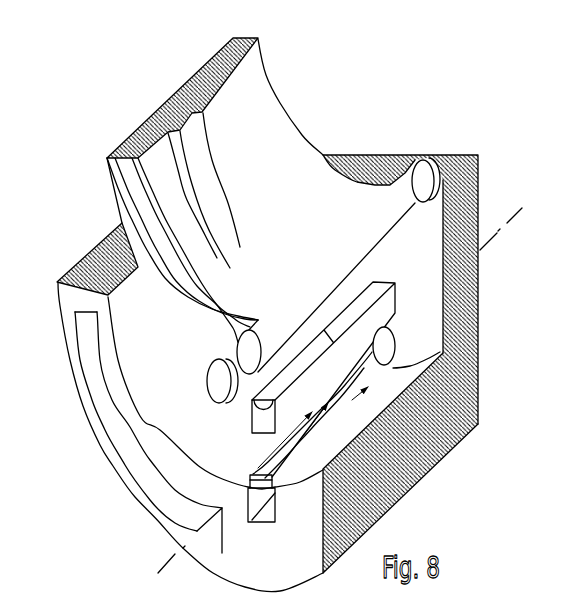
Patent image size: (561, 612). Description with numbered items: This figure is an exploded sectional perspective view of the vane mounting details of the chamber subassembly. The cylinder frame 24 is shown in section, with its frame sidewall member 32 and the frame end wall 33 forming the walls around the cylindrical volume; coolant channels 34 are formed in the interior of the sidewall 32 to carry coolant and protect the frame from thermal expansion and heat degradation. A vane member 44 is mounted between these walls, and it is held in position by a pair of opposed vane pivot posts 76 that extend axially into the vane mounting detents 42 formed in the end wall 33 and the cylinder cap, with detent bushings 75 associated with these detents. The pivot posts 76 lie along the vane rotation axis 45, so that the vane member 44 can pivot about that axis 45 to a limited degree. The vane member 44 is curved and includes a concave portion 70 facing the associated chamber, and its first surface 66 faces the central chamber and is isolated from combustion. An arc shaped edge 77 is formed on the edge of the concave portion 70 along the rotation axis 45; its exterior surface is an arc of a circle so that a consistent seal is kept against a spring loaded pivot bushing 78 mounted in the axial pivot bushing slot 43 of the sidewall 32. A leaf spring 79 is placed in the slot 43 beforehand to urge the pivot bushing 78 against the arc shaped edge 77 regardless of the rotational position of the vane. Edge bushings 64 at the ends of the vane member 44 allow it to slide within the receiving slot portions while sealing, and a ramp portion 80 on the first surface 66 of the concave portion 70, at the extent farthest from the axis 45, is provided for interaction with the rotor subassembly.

The cylinder frame 24 is at (85, 389).
The frame sidewall member 32 is at (401, 483).
The frame end wall 33 is at (466, 210).
The coolant channels 34 is at (132, 444).
The vane mounting detents 42 is at (392, 344).
The axial pivot bushing slot 43 is at (267, 516).
The vane member 44 is at (304, 117).
The vane rotation axis 45 is at (160, 566).
The edge bushings 64 is at (133, 210).
The first surface 66 is at (263, 80).
The concave portion 70 is at (289, 211).
The detent bushings 75 is at (432, 203).
The vane pivot posts 76 is at (248, 383).
The arc shaped edge 77 is at (378, 257).
The spring loaded pivot bushing 78 is at (388, 298).
The leaf spring 79 is at (260, 455).
The ramp portion 80 is at (207, 147).